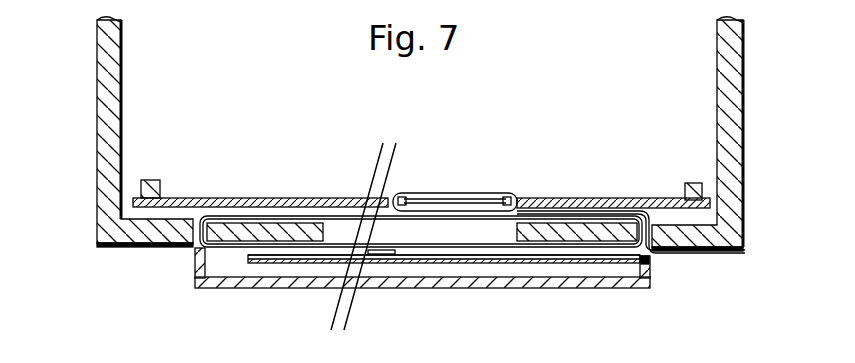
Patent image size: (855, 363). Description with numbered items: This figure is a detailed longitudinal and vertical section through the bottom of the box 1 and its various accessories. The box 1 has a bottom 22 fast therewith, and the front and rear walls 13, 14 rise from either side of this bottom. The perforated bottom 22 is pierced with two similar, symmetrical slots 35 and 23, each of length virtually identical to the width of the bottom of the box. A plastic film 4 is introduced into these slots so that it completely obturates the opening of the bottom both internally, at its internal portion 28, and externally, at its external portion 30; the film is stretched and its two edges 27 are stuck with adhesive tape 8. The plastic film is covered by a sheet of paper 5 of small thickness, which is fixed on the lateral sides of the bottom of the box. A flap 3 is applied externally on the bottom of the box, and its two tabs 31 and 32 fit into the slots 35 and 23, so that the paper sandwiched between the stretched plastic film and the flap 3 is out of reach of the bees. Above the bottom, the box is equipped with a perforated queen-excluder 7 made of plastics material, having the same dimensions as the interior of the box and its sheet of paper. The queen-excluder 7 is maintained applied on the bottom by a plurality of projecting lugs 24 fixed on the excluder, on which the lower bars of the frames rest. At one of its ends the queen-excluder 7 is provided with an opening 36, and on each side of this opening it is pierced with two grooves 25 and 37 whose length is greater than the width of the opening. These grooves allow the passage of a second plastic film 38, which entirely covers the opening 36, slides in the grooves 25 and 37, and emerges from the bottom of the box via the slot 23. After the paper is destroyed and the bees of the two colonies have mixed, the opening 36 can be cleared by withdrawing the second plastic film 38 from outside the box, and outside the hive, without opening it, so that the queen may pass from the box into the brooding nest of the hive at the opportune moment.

The box 1 is at (92, 185).
The flap 3 is at (455, 283).
The plastic film 4 is at (197, 248).
The sheet of paper 5 is at (500, 262).
The queen-excluder 7 is at (212, 199).
The adhesive tape 8 is at (376, 251).
The front wall 13 is at (106, 125).
The rear wall 14 is at (742, 183).
The bottom 22 is at (130, 238).
The slot 23 is at (650, 266).
The projecting lug 24 is at (153, 180).
The groove 25 is at (389, 210).
The film edge 27 is at (386, 262).
The internal film portion 28 is at (338, 216).
The external film portion 30 is at (408, 258).
The flap tab 31 is at (199, 270).
The flap tab 32 is at (641, 285).
The slot 35 is at (200, 216).
The opening 36 is at (481, 200).
The groove 37 is at (518, 199).
The second plastic film 38 is at (440, 193).